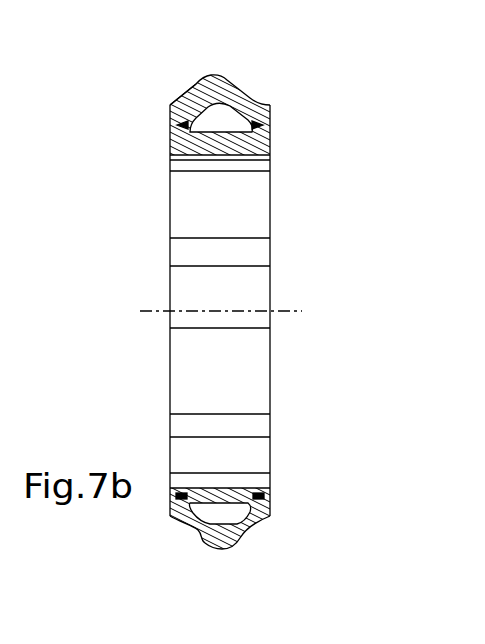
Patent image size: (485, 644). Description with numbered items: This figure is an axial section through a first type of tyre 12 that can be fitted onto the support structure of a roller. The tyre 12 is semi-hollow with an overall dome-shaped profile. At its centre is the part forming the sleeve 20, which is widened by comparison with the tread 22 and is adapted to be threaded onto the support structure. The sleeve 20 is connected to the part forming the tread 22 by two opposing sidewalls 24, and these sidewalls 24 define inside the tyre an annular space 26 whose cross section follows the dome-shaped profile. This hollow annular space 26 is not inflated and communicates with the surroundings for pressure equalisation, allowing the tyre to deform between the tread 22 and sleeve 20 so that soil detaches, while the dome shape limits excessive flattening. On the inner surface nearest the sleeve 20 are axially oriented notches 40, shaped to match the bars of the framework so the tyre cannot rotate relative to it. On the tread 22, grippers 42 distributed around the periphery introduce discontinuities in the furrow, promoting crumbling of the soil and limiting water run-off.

The tyre 12 is at (143, 197).
The sleeve 20 is at (263, 140).
The tread 22 is at (228, 77).
The sidewalls 24 is at (172, 121).
The annular space 26 is at (204, 122).
The notches 40 is at (258, 252).
The grippers 42 is at (197, 90).